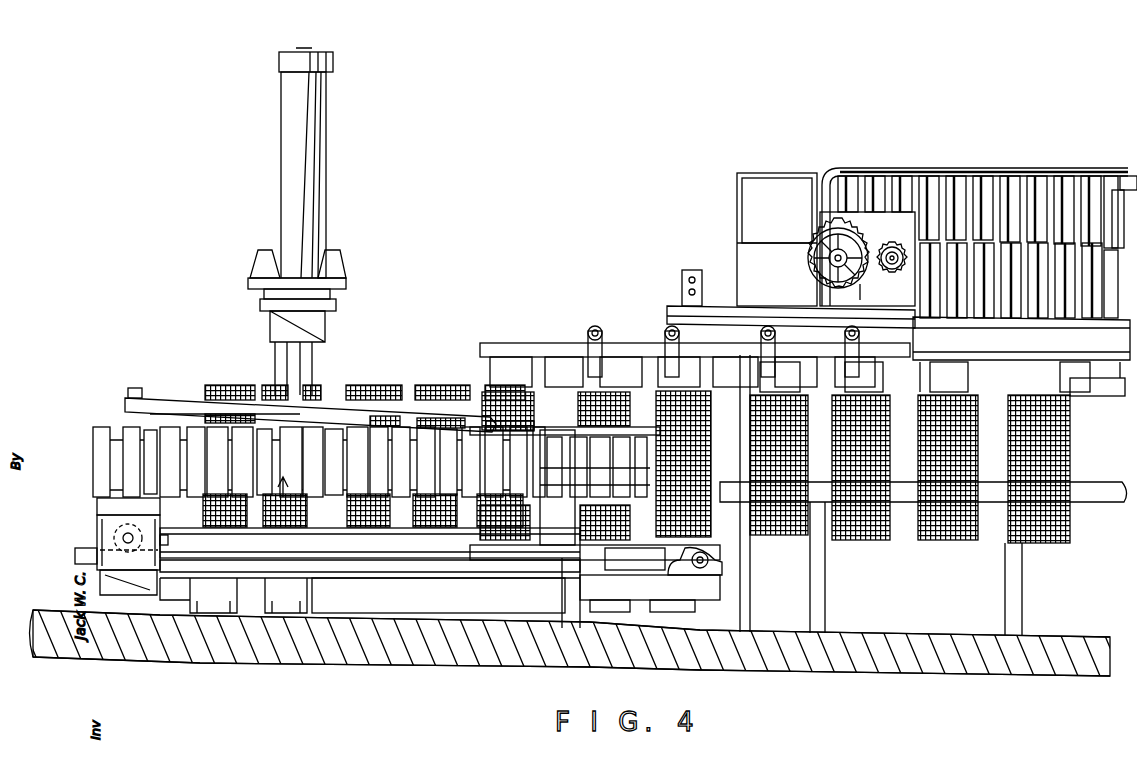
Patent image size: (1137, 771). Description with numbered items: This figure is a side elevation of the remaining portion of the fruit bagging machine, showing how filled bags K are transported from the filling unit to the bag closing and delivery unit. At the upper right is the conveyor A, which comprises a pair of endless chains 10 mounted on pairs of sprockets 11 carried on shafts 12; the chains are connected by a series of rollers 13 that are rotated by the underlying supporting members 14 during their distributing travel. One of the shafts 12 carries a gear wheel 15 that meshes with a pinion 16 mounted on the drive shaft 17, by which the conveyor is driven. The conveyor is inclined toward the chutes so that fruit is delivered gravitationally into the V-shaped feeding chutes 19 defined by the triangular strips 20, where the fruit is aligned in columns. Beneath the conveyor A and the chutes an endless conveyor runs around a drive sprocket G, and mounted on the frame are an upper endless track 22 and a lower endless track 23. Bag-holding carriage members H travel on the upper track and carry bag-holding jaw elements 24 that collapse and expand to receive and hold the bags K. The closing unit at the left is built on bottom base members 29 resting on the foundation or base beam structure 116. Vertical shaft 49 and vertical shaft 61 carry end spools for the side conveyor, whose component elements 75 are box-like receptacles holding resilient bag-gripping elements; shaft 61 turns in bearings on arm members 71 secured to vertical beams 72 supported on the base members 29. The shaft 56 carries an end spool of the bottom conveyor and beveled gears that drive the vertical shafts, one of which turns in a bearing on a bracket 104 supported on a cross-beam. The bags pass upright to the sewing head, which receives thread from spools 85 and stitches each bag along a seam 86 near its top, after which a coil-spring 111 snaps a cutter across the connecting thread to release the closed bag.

The endless chains 10 is at (915, 175).
The sprockets 11 is at (861, 295).
The shafts 12 is at (814, 278).
The rollers 13 is at (1030, 176).
The supporting members 14 is at (1112, 176).
The gear wheel 15 is at (805, 262).
The pinion 16 is at (897, 270).
The drive shaft 17 is at (890, 240).
The V-shaped feeding chutes 19 is at (1010, 310).
The triangular strips 20 is at (960, 310).
The upper endless track 22 is at (1095, 395).
The lower endless track 23 is at (1088, 495).
The bag-holding jaw elements 24 is at (983, 400).
The base member 29 is at (430, 570).
The vertical shaft 49 is at (132, 392).
The shaft 56 is at (110, 548).
The vertical shaft 61 is at (596, 578).
The arm members 71 is at (568, 418).
The vertical beams 72 is at (540, 548).
The conveyor elements 75 is at (272, 528).
The spools 85 is at (333, 271).
The seam 86 is at (205, 390).
The coil-spring 111 is at (266, 388).
The foundation or base beam structure 116 is at (304, 598).
The bracket 104 is at (95, 582).
The conveyor A is at (955, 172).
The drive sprocket G is at (333, 381).
The bags K is at (400, 388).
The bag-holding carriage members H is at (720, 410).